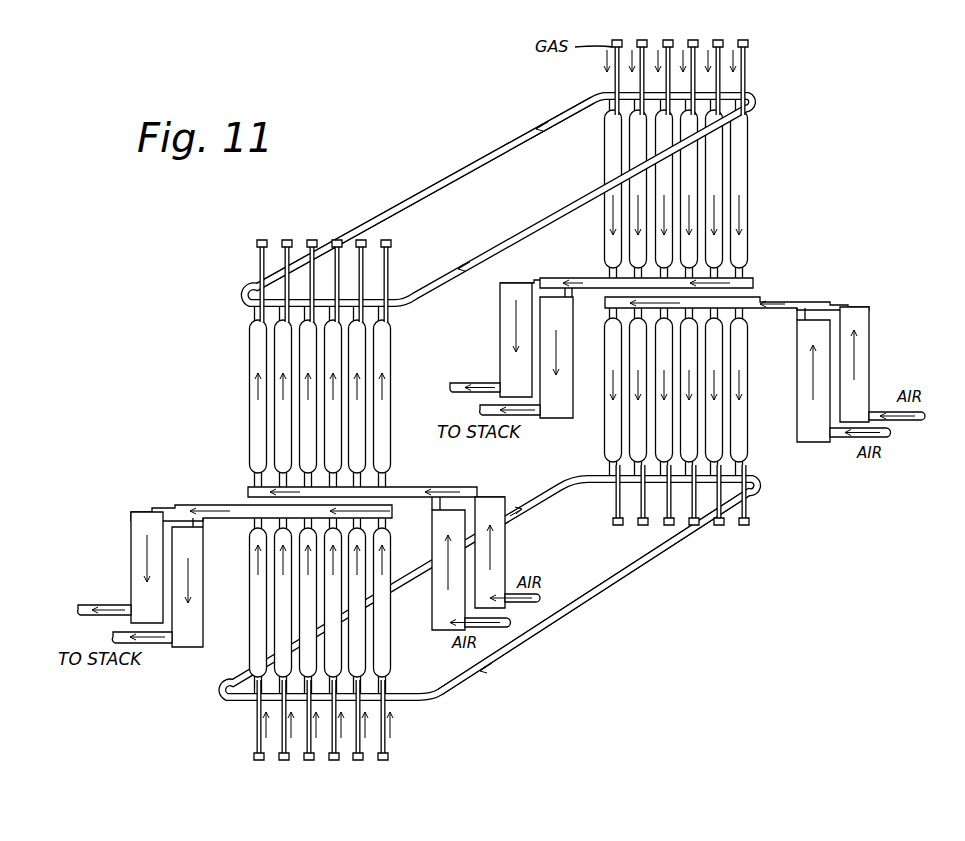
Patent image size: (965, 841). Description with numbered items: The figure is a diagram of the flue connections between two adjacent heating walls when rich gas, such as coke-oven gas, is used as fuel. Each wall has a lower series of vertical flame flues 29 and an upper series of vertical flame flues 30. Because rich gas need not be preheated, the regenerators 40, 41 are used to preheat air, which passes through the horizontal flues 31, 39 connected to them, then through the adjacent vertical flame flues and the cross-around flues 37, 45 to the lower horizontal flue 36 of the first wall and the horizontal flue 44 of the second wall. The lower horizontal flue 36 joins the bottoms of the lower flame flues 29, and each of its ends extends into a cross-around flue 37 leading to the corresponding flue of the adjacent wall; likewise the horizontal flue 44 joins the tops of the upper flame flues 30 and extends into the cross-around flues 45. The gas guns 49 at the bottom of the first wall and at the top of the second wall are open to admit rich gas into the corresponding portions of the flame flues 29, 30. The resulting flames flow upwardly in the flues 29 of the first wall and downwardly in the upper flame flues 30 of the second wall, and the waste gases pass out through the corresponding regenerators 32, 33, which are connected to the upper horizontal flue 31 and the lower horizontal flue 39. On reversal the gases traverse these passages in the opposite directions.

The lower series of vertical flame flues 29 is at (717, 436).
The upper series of vertical flame flues 30 is at (733, 191).
The upper horizontal flue 31 is at (763, 302).
The regenerator 32 is at (513, 318).
The regenerator 33 is at (555, 388).
The lower horizontal flue 36 is at (613, 482).
The cross-around flue 37 is at (620, 570).
The lower horizontal flue 39 is at (750, 283).
The regenerator 40 is at (858, 397).
The regenerator 41 is at (818, 342).
The horizontal flue 44 is at (740, 95).
The cross-around flue 45 is at (564, 212).
The gas gun 49 is at (750, 73).